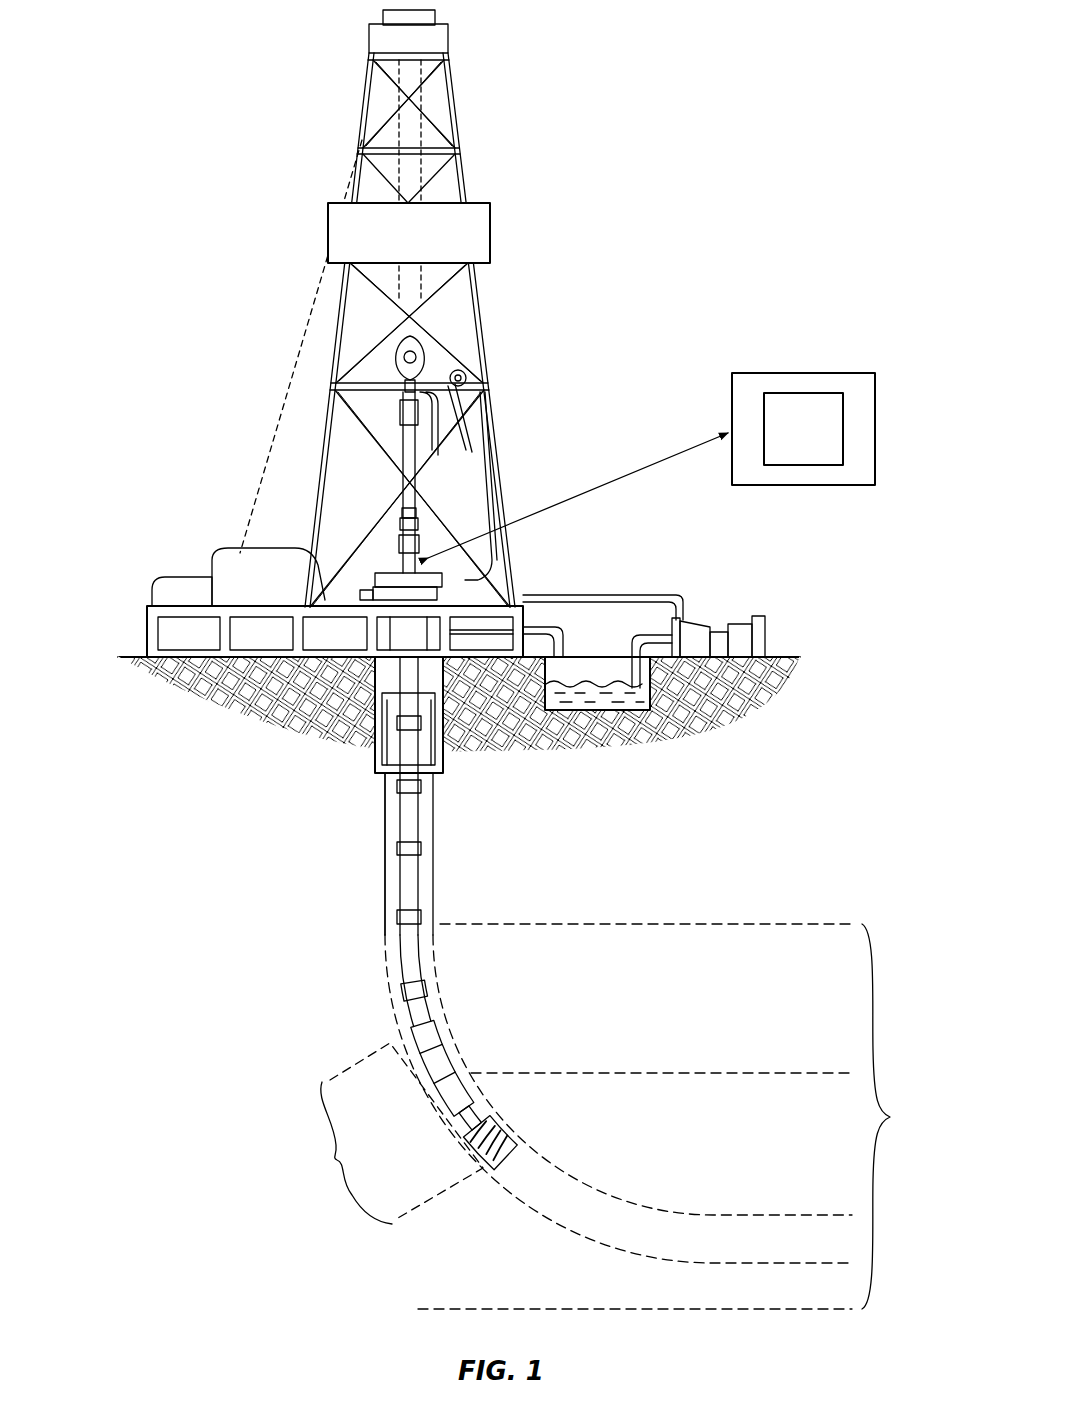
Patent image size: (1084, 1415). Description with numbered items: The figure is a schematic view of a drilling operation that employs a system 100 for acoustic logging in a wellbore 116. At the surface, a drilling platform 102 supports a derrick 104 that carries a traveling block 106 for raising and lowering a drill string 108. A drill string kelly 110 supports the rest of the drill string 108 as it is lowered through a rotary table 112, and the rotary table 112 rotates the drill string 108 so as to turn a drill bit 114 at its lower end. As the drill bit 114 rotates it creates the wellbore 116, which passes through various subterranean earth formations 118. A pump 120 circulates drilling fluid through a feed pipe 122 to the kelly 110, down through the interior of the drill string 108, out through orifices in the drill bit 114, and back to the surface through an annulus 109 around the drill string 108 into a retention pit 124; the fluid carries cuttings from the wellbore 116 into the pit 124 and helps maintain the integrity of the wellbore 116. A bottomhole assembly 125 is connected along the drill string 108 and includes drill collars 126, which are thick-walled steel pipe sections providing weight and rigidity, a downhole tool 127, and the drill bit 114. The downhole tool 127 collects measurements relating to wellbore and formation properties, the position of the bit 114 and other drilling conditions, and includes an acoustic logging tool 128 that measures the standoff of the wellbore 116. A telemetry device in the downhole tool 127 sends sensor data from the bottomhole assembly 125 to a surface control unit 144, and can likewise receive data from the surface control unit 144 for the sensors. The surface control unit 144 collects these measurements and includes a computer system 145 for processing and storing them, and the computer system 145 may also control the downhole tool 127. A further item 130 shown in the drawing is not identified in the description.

The system 100 is at (230, 100).
The drilling platform 102 is at (147, 638).
The derrick 104 is at (468, 141).
The traveling block 106 is at (437, 362).
The drill string 108 is at (421, 820).
The annulus 109 is at (388, 868).
The drill string kelly 110 is at (397, 413).
The rotary table 112 is at (392, 575).
The drill bit 114 is at (514, 1162).
The wellbore 116 is at (436, 842).
The subterranean earth formations 118 is at (528, 983).
The pump 120 is at (700, 620).
The feed pipe 122 is at (597, 596).
The retention pit 124 is at (585, 690).
The bottomhole assembly 125 is at (386, 1133).
The drill collars 126 is at (462, 1095).
The downhole tool 127 is at (440, 1072).
The acoustic logging tool 128 is at (418, 1048).
The telemetry sub / sensor 130 is at (418, 523).
The surface control unit 144 is at (803, 373).
The computer system 145 is at (826, 443).